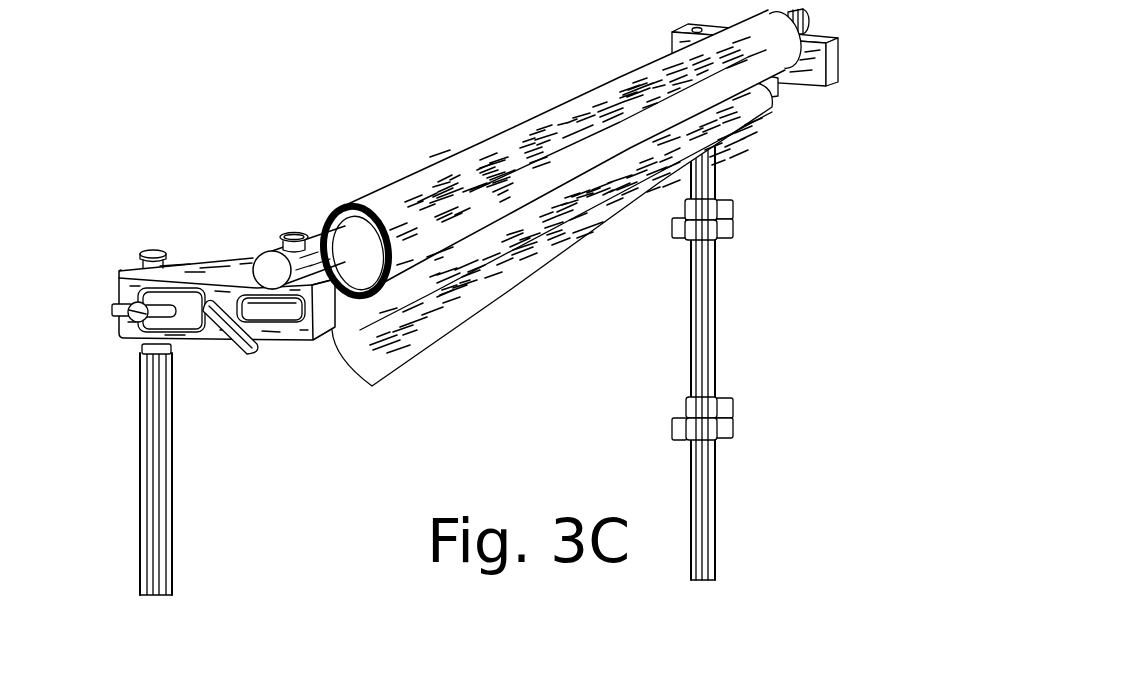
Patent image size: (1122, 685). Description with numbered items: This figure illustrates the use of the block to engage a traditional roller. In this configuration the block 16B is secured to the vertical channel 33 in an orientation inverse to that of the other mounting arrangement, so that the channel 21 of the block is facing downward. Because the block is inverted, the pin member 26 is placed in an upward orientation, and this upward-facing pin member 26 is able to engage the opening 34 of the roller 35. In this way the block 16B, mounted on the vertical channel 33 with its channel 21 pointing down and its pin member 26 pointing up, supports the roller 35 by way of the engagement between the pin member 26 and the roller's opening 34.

The block 16B is at (142, 279).
The opening 34 is at (276, 246).
The pin member 26 is at (294, 231).
The roller 35 is at (333, 245).
The channel 21 is at (246, 343).
The vertical channel 33 is at (160, 520).